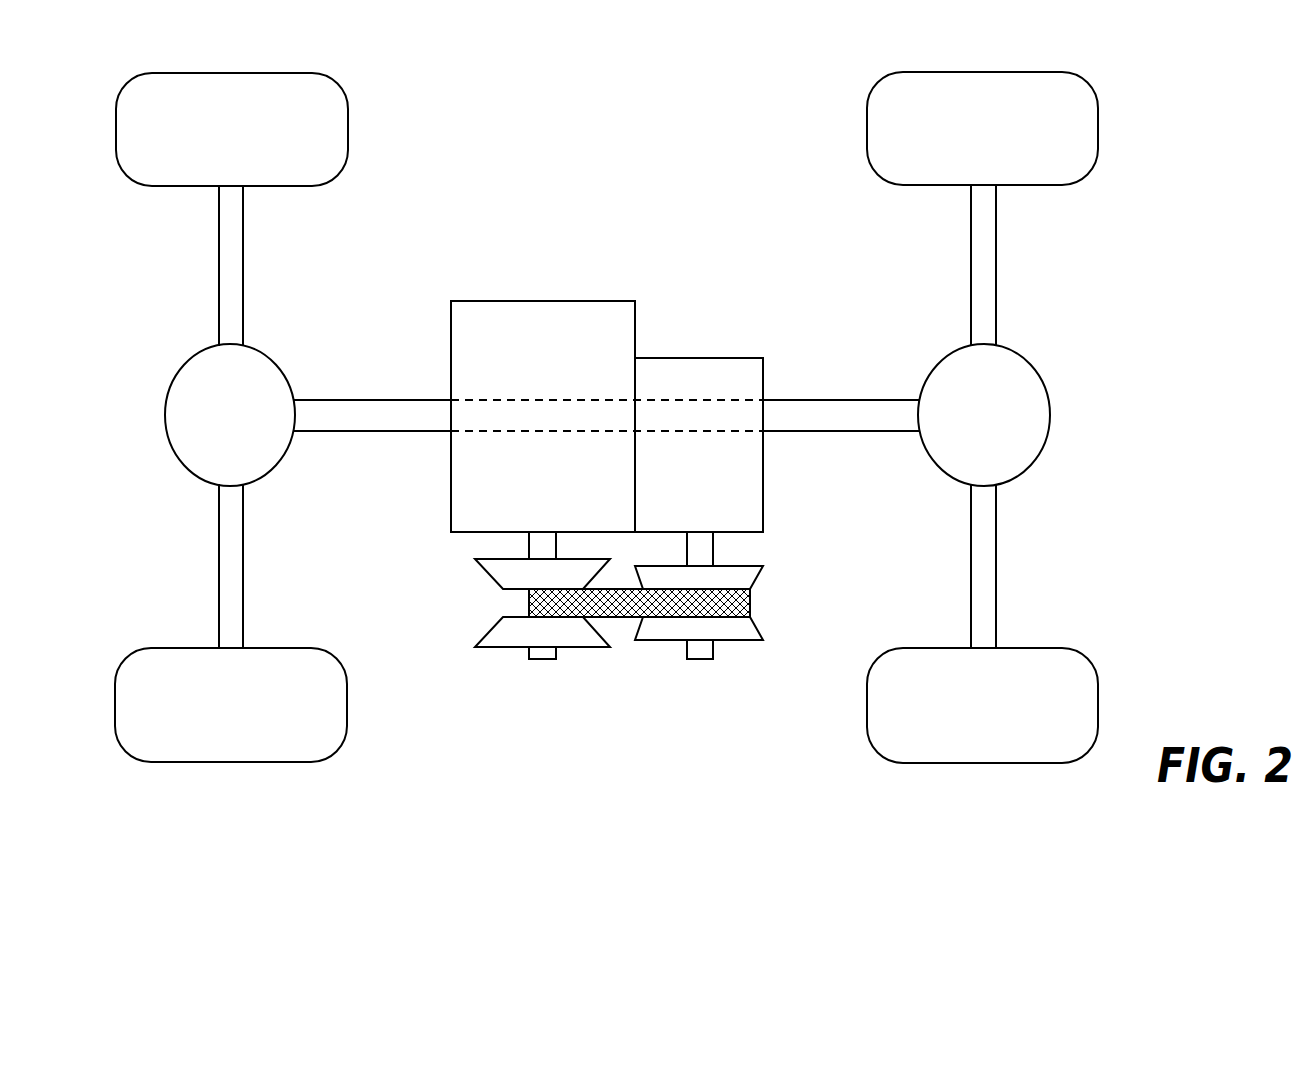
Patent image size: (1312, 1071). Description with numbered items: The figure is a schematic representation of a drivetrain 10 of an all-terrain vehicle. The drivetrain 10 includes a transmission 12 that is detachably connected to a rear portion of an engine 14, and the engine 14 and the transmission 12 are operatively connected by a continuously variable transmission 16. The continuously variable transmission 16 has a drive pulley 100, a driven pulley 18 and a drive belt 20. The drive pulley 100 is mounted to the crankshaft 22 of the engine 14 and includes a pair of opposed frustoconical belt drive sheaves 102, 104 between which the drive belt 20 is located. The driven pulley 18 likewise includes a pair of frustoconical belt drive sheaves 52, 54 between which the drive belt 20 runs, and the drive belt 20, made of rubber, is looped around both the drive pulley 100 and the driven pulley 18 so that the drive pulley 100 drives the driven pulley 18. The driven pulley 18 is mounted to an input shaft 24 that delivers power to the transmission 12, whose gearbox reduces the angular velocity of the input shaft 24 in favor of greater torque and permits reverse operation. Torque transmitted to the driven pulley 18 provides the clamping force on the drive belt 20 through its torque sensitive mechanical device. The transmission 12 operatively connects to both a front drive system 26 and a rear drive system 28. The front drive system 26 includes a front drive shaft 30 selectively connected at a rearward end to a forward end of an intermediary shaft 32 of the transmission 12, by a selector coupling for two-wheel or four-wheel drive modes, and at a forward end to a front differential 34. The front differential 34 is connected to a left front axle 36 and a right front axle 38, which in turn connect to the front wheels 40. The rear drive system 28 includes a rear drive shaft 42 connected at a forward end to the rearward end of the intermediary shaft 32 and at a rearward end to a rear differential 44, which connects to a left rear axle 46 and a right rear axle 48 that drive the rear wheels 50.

The drivetrain 10 is at (641, 203).
The transmission 12 is at (685, 512).
The engine 14 is at (529, 512).
The continuously variable transmission 16 is at (626, 697).
The driven pulley 18 is at (724, 633).
The drive belt 20 is at (600, 617).
The crankshaft 22 is at (541, 660).
The input shaft 24 is at (695, 660).
The front drive system 26 is at (385, 279).
The rear drive system 28 is at (812, 272).
The front drive shaft 30 is at (375, 400).
The intermediary shaft 32 is at (699, 433).
The front differential 34 is at (219, 427).
The left front axle 36 is at (244, 586).
The right front axle 38 is at (244, 288).
The front wheels 40 is at (219, 140).
The rear drive shaft 42 is at (830, 400).
The rear differential 44 is at (972, 427).
The left rear axle 46 is at (997, 572).
The right rear axle 48 is at (997, 263).
The rear wheels 50 is at (970, 140).
The belt drive sheave 52 is at (757, 577).
The belt drive sheave 54 is at (758, 631).
The drive pulley 100 is at (510, 642).
The belt drive sheave 102 is at (491, 578).
The belt drive sheave 104 is at (488, 636).